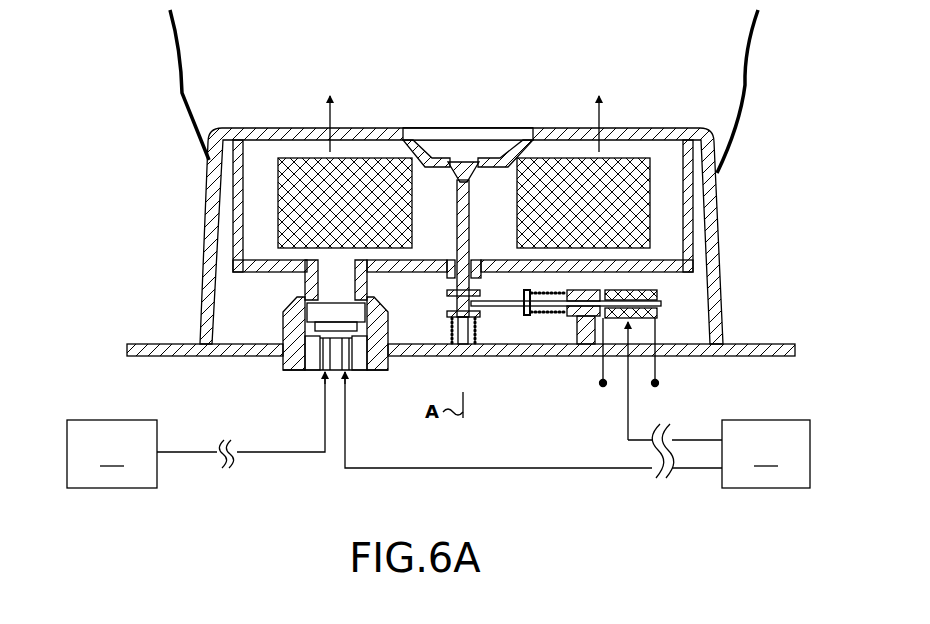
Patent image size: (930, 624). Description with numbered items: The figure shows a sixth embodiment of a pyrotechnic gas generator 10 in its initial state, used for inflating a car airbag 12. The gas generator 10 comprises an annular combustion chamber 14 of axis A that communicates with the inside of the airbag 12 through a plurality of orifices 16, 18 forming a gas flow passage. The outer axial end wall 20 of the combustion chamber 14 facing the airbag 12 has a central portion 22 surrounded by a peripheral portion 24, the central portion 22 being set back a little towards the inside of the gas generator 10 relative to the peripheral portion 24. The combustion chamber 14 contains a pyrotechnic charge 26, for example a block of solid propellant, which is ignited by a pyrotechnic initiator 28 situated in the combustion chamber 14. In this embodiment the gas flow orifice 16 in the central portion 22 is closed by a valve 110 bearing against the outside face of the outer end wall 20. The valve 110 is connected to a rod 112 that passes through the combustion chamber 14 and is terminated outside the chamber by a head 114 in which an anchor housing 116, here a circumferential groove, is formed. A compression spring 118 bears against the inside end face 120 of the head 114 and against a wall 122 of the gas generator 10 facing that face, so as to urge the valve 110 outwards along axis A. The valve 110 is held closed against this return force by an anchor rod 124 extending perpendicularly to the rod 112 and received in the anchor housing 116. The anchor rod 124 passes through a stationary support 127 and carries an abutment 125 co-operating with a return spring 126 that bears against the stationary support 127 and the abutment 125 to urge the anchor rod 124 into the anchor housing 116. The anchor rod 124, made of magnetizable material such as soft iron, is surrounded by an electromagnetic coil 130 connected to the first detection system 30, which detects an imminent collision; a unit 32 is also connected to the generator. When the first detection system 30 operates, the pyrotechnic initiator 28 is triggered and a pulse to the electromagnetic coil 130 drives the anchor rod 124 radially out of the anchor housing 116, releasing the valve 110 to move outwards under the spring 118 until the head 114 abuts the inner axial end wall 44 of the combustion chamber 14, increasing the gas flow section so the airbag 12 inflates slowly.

The pyrotechnic gas generator 10 is at (688, 83).
The car airbag 12 is at (173, 32).
The combustion chamber 14 is at (666, 183).
The gas flow orifice 16 is at (454, 180).
The orifice 18 is at (322, 128).
The outer axial end wall 20 is at (222, 126).
The central portion 22 is at (426, 138).
The peripheral portion 24 is at (262, 128).
The pyrotechnic charge 26 is at (293, 195).
The pyrotechnic initiator 28 is at (313, 313).
The first detection system 30 is at (577, 405).
The evaluation unit 32 is at (196, 430).
The inner axial end wall 44 is at (662, 268).
The valve 110 is at (465, 128).
The rod 112 is at (470, 202).
The head 114 is at (443, 301).
The anchor housing 116 is at (472, 282).
The compression spring 118 is at (450, 332).
The inside end face 120 is at (475, 352).
The wall 122 is at (687, 355).
The anchor rod 124 is at (565, 295).
The abutment 125 is at (530, 308).
The return spring 126 is at (543, 320).
The stationary support 127 is at (572, 346).
The electromagnetic coil 130 is at (660, 306).